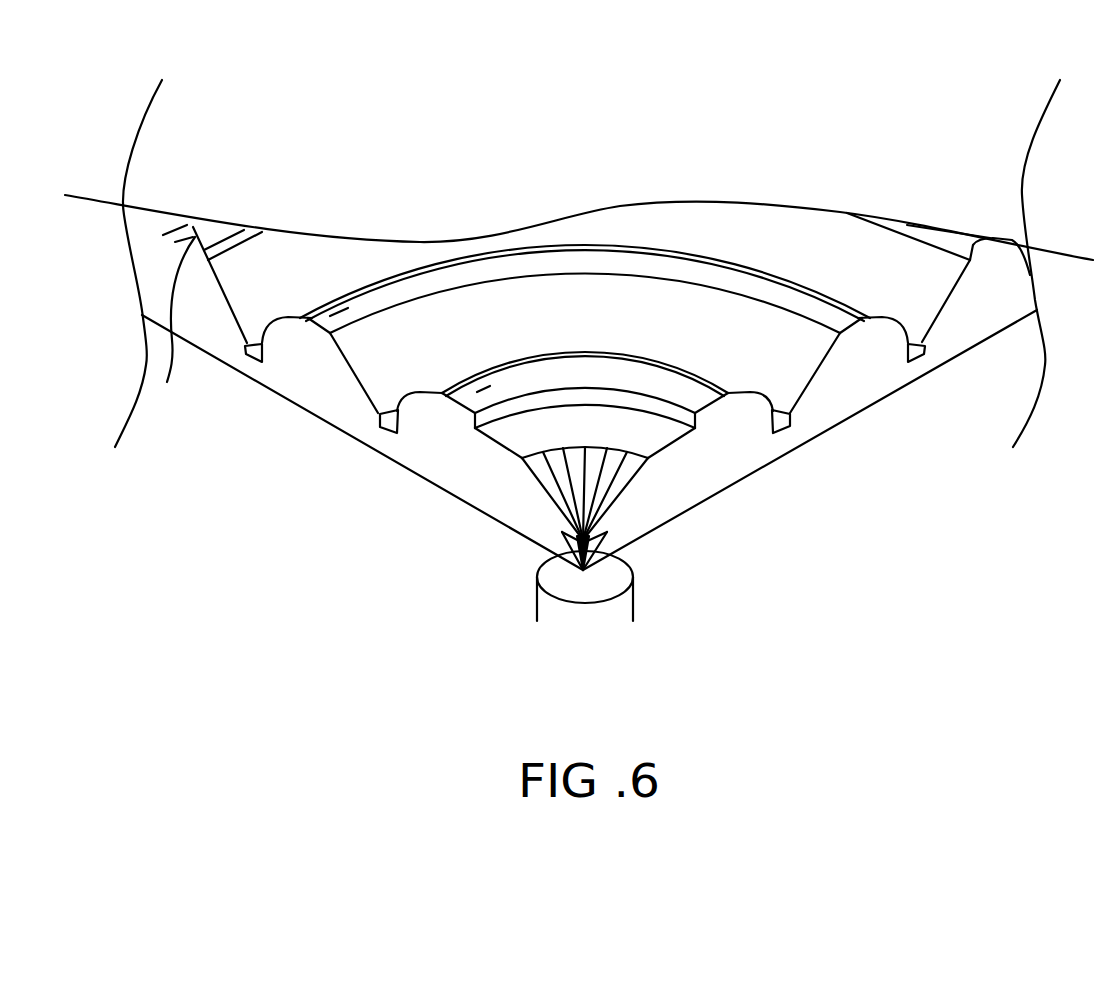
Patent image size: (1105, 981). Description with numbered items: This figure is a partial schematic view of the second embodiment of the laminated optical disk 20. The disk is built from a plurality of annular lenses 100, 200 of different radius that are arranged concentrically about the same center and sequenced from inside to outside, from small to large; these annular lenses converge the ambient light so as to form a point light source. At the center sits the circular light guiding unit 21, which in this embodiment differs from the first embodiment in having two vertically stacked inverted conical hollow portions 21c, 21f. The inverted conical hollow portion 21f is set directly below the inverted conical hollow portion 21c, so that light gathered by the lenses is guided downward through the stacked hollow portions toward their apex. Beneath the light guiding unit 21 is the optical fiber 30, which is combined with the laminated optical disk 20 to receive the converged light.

The laminated optical disk 20 is at (873, 130).
The annular lens 200 is at (170, 323).
The annular lens 100 is at (318, 322).
The circular light guiding unit 21 is at (453, 407).
The inverted conical hollow portion 21c is at (561, 478).
The inverted conical hollow portion 21f is at (587, 550).
The optical fiber 30 is at (622, 604).